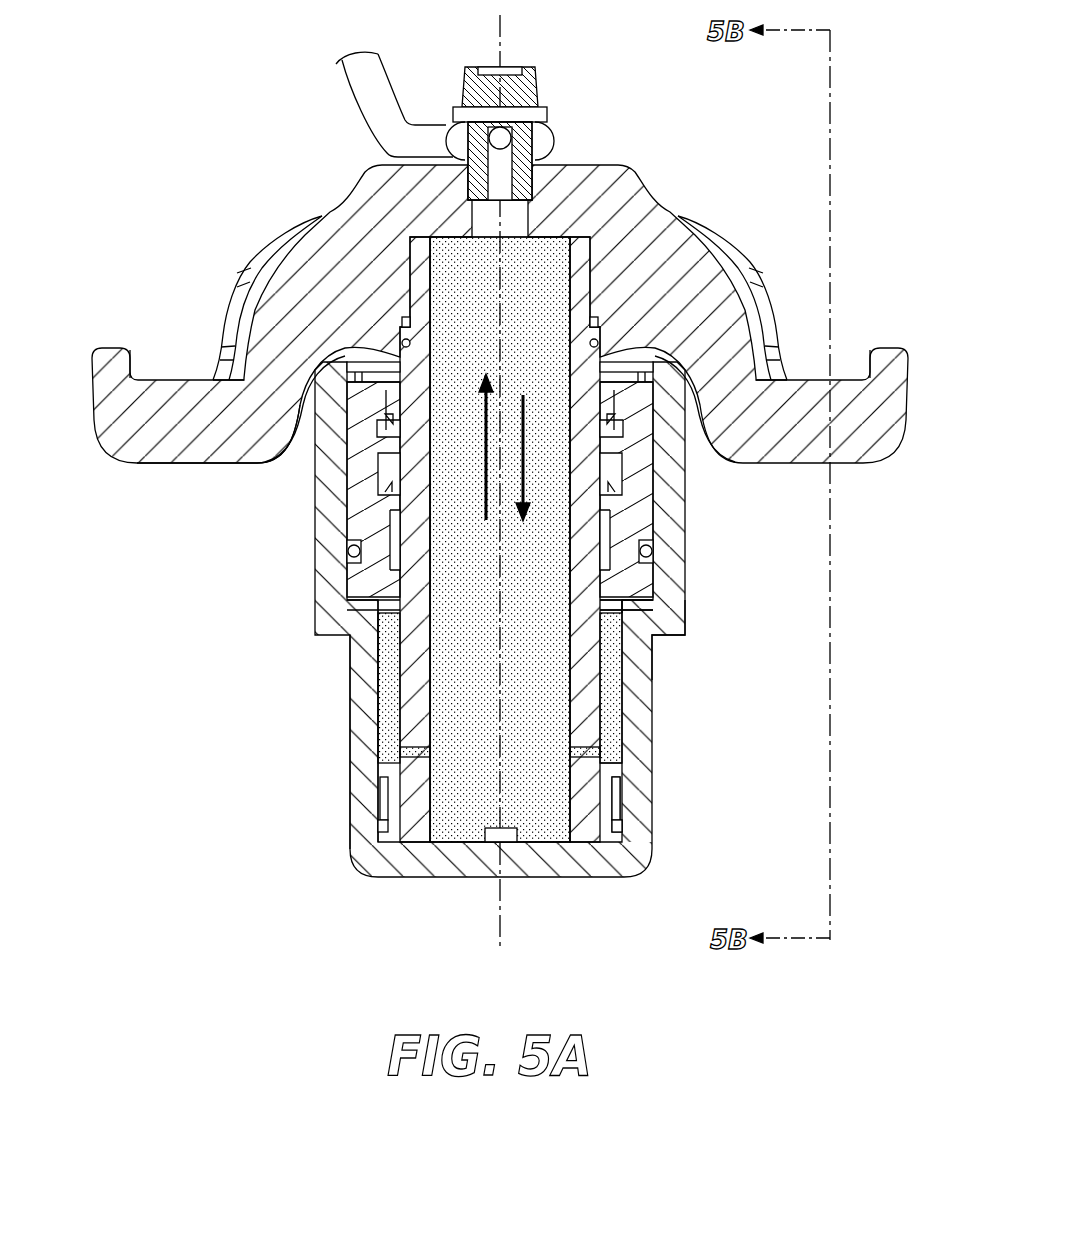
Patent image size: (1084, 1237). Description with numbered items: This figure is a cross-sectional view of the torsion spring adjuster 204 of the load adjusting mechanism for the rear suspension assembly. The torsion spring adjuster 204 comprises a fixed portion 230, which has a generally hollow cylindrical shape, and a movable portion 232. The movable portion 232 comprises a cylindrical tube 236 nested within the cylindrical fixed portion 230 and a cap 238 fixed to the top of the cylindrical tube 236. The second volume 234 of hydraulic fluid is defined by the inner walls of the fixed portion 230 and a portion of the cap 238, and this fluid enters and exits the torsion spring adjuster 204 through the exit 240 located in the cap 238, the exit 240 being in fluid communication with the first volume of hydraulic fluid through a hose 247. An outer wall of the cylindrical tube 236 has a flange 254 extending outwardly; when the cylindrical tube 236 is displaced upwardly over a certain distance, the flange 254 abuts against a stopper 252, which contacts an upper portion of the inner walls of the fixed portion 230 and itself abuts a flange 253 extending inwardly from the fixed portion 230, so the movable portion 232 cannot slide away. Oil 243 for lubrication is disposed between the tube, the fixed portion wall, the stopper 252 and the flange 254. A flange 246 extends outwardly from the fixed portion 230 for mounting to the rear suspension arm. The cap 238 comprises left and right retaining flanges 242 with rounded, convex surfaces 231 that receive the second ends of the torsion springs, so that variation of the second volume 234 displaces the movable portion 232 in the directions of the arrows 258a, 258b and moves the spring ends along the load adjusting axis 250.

The torsion spring adjuster 204 is at (192, 588).
The fixed portion 230 is at (372, 703).
The surface 231 is at (148, 373).
The movable portion 232 is at (230, 452).
The second volume of hydraulic fluid 234 is at (489, 747).
The cylindrical tube 236 is at (420, 527).
The cap 238 is at (293, 247).
The exit 240 is at (515, 158).
The retaining flange 242 is at (180, 398).
The oil 243 is at (388, 745).
The flange 246 is at (680, 623).
The hose 247 is at (355, 90).
The load adjusting axis 250 is at (502, 560).
The stopper 252 is at (642, 506).
The flange 253 is at (612, 597).
The flange 254 is at (605, 752).
The arrow 258a is at (485, 500).
The arrow 258b is at (522, 400).